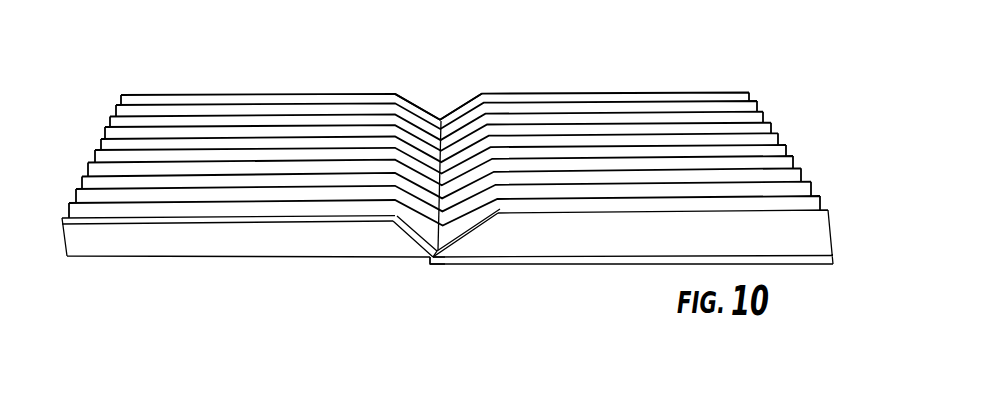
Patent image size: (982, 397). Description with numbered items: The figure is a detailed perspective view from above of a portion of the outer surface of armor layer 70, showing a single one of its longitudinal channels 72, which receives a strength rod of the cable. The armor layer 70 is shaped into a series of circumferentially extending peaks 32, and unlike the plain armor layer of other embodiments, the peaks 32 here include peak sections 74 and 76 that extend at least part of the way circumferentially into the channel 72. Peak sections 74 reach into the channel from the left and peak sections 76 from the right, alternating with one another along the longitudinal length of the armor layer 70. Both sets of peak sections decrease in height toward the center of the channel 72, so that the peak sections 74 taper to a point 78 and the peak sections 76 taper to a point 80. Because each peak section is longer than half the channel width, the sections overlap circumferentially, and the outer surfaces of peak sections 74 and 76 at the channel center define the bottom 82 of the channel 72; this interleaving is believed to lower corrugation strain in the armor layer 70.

The armor layer 70 is at (809, 109).
The peaks 32 is at (718, 104).
The longitudinal channel 72 is at (443, 96).
The bottom of channel 82 is at (445, 122).
The peak sections 74 is at (428, 243).
The peak sections 76 is at (478, 237).
The point 78 is at (452, 240).
The point 80 is at (443, 262).